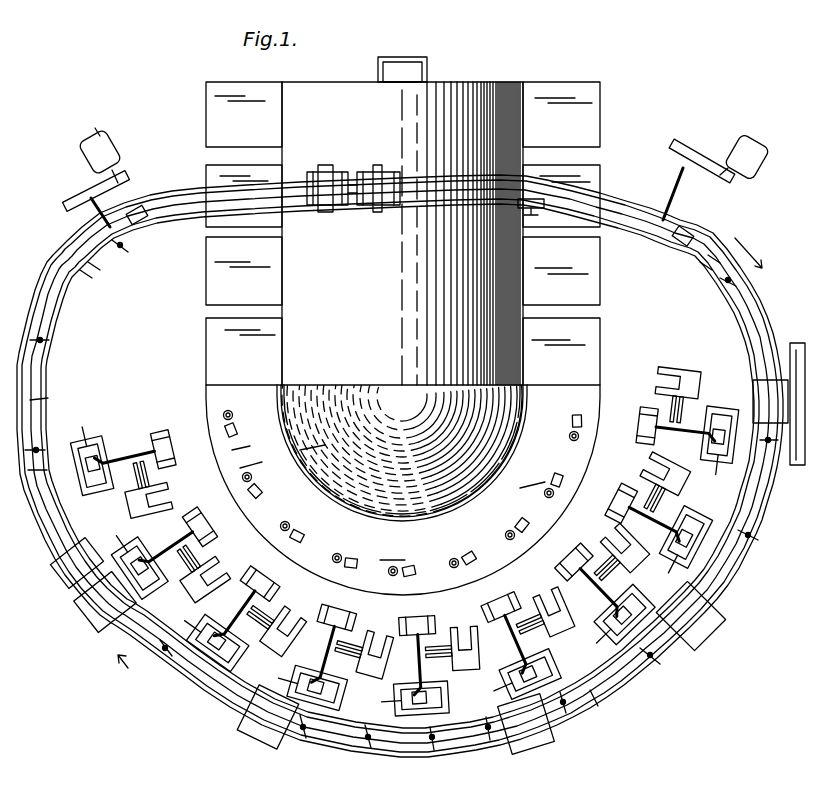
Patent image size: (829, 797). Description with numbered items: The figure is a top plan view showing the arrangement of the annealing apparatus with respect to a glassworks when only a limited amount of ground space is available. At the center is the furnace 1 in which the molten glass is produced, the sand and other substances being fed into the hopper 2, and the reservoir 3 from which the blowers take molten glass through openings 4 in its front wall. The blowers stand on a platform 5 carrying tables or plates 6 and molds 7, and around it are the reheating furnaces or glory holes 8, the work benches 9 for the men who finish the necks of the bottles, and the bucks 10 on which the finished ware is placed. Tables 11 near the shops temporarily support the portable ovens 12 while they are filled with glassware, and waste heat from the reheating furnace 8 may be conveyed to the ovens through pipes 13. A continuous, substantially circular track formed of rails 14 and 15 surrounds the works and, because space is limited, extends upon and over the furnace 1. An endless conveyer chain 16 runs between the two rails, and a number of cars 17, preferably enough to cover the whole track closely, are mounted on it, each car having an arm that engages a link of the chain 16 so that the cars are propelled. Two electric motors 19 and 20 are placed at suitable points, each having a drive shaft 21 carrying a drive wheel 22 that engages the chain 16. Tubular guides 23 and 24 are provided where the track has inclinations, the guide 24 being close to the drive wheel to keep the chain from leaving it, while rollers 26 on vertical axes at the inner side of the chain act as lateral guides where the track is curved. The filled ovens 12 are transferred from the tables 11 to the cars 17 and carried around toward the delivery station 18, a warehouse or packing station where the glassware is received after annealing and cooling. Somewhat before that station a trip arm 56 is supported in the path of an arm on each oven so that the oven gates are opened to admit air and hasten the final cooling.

The furnace 1 is at (352, 108).
The hopper 2 is at (427, 72).
The reservoir 3 is at (402, 299).
The openings 4 is at (525, 412).
The platform 5 is at (213, 398).
The tables or plates 6 is at (265, 492).
The molds 7 is at (246, 480).
The reheating furnace 8 is at (208, 508).
The work benches 9 is at (150, 505).
The bucks 10 is at (150, 480).
The tables 11 is at (95, 452).
The portable ovens 12 is at (98, 492).
The pipes 13 is at (668, 436).
The rail 14 is at (185, 228).
The rail 15 is at (186, 192).
The endless conveyer chain 16 is at (45, 377).
The cars 17 is at (365, 205).
The delivery station 18 is at (798, 468).
The electric motor 19 is at (118, 152).
The electric motor 20 is at (732, 150).
The drive shaft 21 is at (93, 225).
The drive wheel 22 is at (138, 212).
The guide 23 is at (48, 335).
The guide 24 is at (93, 272).
The rollers 26 is at (37, 402).
The trip arm 56 is at (540, 212).